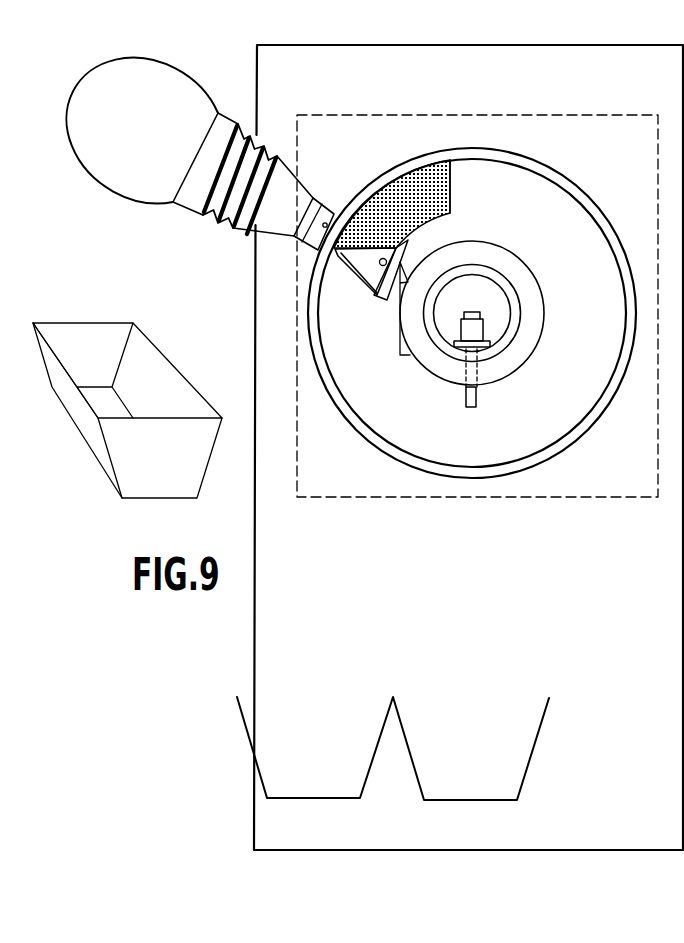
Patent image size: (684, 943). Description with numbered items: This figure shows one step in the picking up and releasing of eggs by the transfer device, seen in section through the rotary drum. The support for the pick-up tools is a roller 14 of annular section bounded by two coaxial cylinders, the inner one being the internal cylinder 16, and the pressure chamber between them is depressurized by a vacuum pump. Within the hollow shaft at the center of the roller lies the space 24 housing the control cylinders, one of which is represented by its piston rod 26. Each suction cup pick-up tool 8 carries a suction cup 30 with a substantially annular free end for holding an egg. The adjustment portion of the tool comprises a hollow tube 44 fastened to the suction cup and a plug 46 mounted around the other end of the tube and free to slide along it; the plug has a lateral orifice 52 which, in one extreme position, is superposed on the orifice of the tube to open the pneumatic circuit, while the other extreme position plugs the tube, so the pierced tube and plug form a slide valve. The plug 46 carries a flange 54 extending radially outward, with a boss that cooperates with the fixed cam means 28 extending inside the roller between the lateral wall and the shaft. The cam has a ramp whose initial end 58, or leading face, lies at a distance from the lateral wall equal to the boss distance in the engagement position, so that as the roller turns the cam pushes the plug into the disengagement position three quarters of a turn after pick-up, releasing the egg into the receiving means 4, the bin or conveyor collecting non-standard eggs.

The receiving means 4 is at (82, 340).
The suction cup pick-up tool 8 is at (268, 240).
The roller 14 is at (615, 227).
The internal cylinder 16 is at (543, 348).
The space inside the shaft 24 is at (487, 320).
The piston rod 26 is at (478, 398).
The cam means 28 is at (407, 188).
The suction cup 30 is at (196, 221).
The hollow tube 44 is at (353, 218).
The plug 46 is at (360, 265).
The lateral orifice 52 is at (384, 300).
The flange 54 is at (417, 243).
The initial end of the cam ramp 58 is at (455, 212).